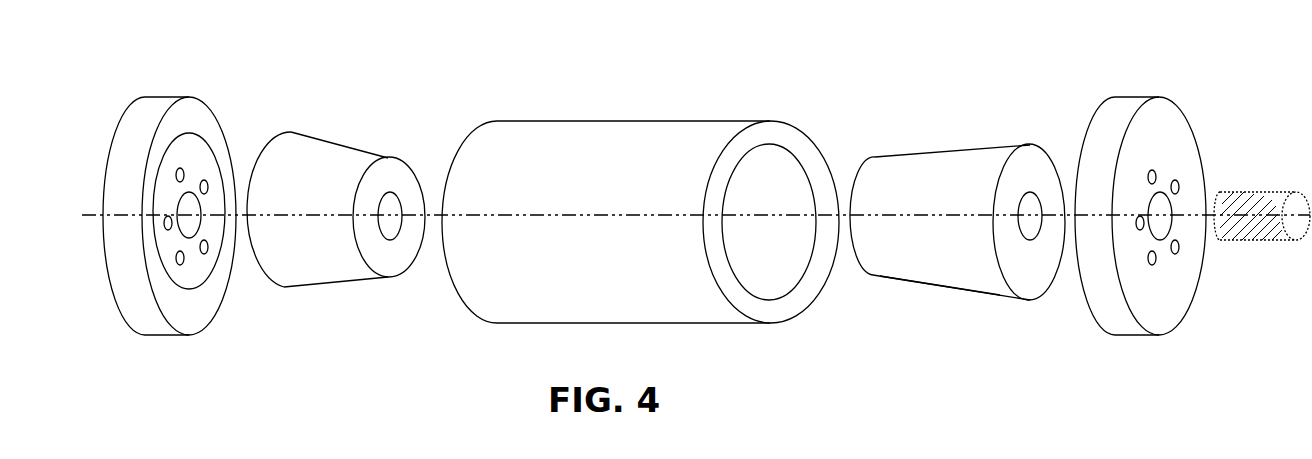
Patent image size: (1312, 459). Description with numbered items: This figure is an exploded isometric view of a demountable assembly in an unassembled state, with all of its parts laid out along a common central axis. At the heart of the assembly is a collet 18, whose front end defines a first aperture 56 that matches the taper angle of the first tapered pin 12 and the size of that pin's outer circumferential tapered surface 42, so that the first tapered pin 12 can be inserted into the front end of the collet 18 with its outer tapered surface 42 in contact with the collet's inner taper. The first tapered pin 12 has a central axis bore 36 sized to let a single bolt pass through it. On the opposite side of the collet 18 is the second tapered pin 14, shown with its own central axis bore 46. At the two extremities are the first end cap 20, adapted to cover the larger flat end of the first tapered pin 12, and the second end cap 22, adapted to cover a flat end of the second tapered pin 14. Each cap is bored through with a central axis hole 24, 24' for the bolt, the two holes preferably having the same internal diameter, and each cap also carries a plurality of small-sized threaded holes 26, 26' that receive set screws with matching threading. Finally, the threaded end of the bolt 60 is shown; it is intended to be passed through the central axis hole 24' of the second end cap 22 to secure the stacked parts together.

The first tapered pin 12 is at (935, 168).
The second tapered pin 14 is at (307, 157).
The collet 18 is at (592, 145).
The first end cap 20 is at (1112, 120).
The second end cap 22 is at (152, 108).
The central axis hole 24 is at (1174, 293).
The central axis hole 24' is at (205, 293).
The threaded holes 26 is at (1185, 181).
The threaded holes 26' is at (211, 175).
The central axis bore 36 is at (1030, 213).
The outer circumferential tapered surface 42 is at (935, 285).
The central axis bore 46 is at (390, 213).
The first aperture 56 is at (768, 182).
The bolt 60 is at (1278, 190).